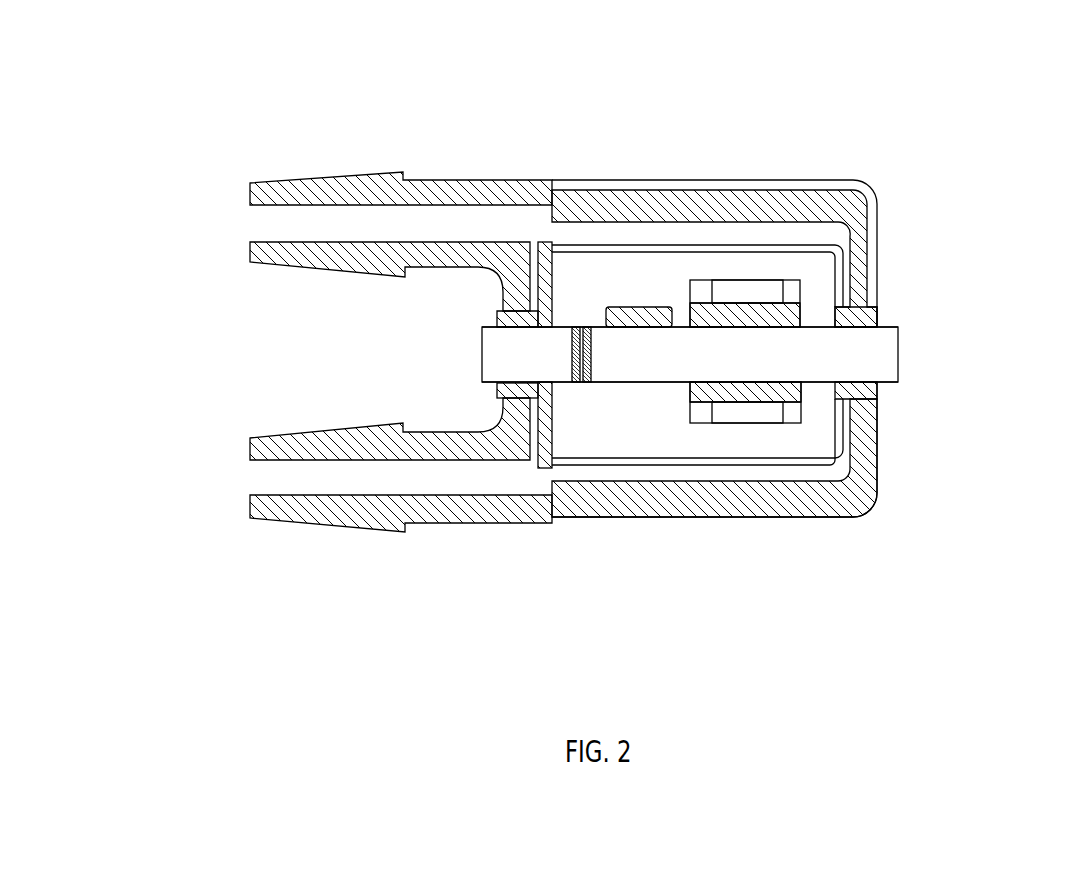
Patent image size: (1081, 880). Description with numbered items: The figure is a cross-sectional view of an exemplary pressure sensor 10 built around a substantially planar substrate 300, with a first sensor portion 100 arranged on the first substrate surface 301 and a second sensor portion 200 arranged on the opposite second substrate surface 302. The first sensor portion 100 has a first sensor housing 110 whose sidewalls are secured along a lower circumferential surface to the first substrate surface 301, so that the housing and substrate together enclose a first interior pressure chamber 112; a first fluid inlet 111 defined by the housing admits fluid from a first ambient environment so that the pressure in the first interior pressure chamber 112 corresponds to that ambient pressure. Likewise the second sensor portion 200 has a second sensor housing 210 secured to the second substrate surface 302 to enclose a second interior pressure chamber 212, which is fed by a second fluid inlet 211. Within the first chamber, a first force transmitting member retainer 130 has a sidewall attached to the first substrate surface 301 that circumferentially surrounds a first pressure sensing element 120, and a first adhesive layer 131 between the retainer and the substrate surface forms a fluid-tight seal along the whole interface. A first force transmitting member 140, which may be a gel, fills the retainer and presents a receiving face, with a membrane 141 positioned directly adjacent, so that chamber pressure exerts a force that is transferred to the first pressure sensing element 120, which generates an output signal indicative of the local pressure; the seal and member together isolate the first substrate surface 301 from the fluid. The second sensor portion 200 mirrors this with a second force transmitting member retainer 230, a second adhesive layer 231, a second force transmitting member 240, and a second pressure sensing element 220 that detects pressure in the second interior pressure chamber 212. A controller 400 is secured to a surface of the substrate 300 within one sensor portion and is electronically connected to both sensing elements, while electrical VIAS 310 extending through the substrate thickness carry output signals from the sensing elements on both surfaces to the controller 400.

The pressure sensor 10 is at (231, 690).
The first sensor portion 100 is at (328, 303).
The first fluid inlet 111 is at (250, 230).
The first sensor housing 110 is at (832, 182).
The first interior pressure chamber 112 is at (660, 232).
The first pressure sensing element 120 is at (803, 292).
The first force transmitting member retainer 130 is at (833, 245).
The first adhesive layer 131 is at (888, 323).
The first force transmitting member 140 is at (826, 276).
The membrane 141 is at (745, 248).
The second sensor portion 200 is at (314, 392).
The second fluid inlet 211 is at (250, 478).
The second sensor housing 210 is at (872, 502).
The second interior pressure chamber 212 is at (707, 477).
The second pressure sensing element 220 is at (720, 438).
The second force transmitting member retainer 230 is at (845, 420).
The second adhesive layer 231 is at (893, 392).
The second force transmitting member 240 is at (830, 440).
The substrate 300 is at (900, 352).
The first substrate surface 301 is at (540, 310).
The second substrate surface 302 is at (609, 385).
The electrical VIAS 310 is at (562, 354).
The controller 400 is at (637, 300).